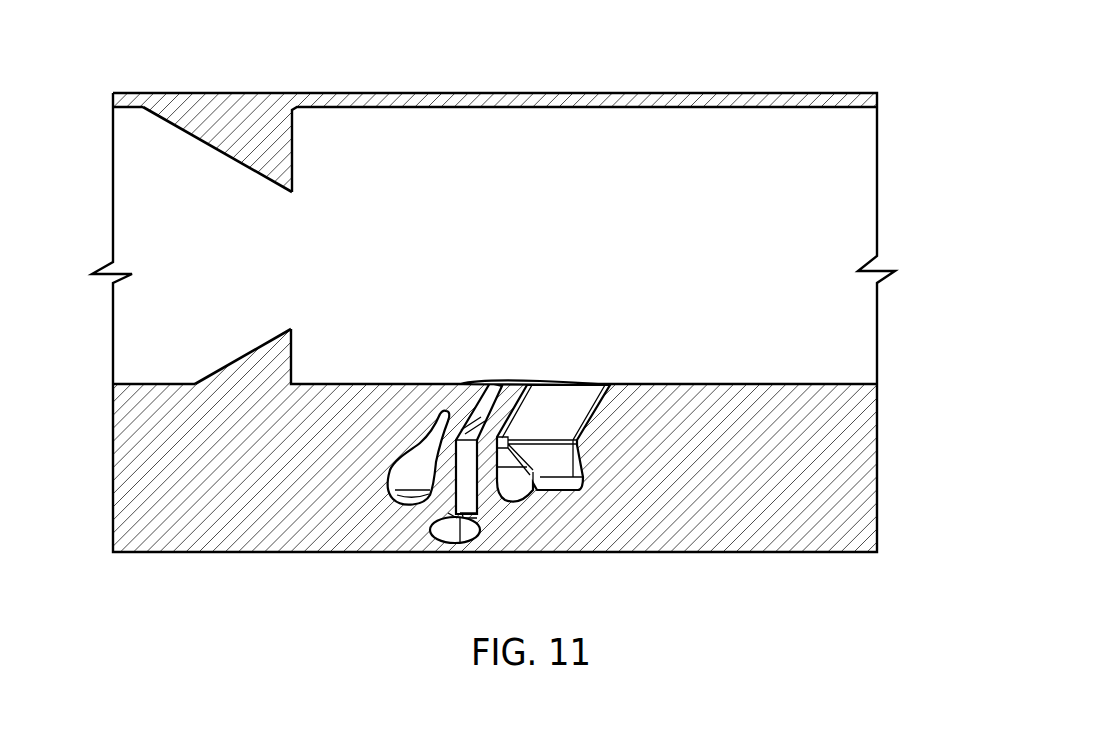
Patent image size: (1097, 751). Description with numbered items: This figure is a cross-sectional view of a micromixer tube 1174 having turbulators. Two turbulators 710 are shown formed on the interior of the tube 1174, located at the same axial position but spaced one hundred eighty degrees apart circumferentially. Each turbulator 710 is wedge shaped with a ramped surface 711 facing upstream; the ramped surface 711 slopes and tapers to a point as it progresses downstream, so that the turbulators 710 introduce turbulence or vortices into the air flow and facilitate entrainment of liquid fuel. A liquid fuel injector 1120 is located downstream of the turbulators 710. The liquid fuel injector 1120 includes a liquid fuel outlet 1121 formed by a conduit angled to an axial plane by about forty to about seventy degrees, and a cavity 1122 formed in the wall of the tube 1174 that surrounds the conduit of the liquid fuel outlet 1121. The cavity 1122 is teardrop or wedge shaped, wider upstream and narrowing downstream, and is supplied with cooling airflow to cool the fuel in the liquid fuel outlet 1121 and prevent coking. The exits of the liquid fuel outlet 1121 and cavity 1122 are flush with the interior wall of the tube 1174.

The micromixer tube 1174 is at (486, 312).
The turbulator 710 is at (262, 136).
The ramped surface 711 is at (238, 164).
The liquid fuel injector 1120 is at (650, 413).
The liquid fuel outlet 1121 is at (508, 382).
The cavity 1122 is at (397, 481).